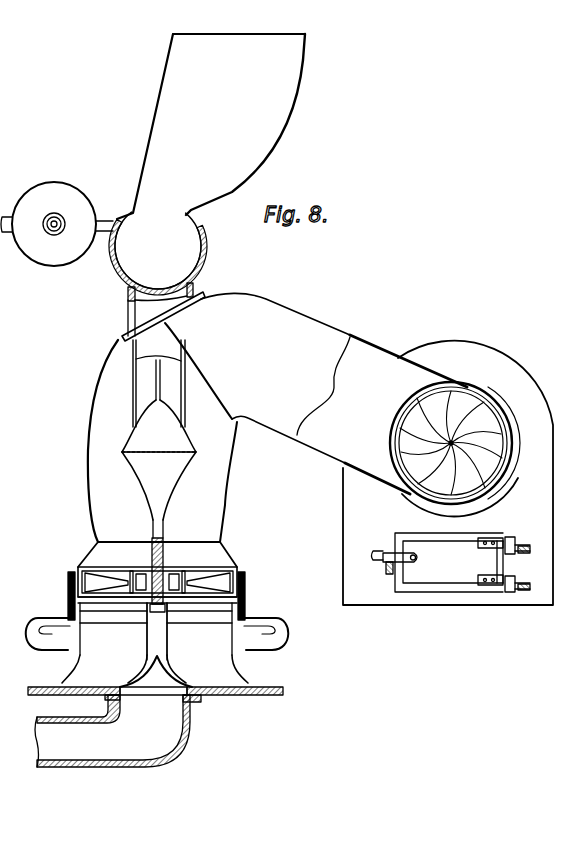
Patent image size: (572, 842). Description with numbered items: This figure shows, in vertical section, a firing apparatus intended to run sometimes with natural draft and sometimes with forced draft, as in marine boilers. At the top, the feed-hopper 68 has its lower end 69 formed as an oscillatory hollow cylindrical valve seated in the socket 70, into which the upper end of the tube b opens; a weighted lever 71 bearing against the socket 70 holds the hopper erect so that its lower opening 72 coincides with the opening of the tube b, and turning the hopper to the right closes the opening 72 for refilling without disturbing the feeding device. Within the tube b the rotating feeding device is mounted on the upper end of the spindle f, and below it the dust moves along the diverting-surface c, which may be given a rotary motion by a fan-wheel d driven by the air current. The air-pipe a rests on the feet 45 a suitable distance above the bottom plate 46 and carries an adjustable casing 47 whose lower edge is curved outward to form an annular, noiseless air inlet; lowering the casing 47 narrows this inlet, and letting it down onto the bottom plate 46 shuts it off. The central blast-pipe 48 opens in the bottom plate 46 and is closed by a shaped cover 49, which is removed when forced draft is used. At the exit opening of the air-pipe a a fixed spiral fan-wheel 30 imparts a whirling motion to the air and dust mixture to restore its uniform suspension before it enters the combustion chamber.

The feed-hopper 68 is at (288, 126).
The lower end of the feed-hopper 69 is at (205, 238).
The socket 70 is at (116, 262).
The weighted lever 71 is at (82, 212).
The lower opening of the hopper 72 is at (141, 291).
The tube b is at (136, 318).
The spindle f is at (156, 380).
The diverting-surface c is at (187, 441).
The air-pipe a is at (369, 346).
The fan housing i is at (537, 413).
The fixed spiral fan-wheel 30 is at (506, 455).
The fan-wheel d is at (100, 572).
The adjustable casing 47 is at (246, 606).
The feet 45 is at (74, 664).
The bottom plate 46 is at (259, 689).
The cover 49 is at (124, 684).
The central blast-pipe 48 is at (183, 728).